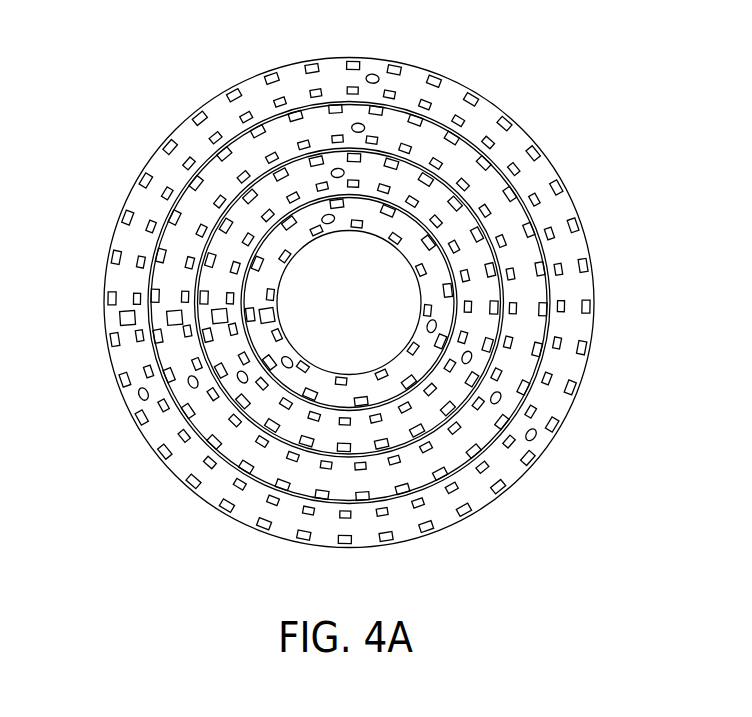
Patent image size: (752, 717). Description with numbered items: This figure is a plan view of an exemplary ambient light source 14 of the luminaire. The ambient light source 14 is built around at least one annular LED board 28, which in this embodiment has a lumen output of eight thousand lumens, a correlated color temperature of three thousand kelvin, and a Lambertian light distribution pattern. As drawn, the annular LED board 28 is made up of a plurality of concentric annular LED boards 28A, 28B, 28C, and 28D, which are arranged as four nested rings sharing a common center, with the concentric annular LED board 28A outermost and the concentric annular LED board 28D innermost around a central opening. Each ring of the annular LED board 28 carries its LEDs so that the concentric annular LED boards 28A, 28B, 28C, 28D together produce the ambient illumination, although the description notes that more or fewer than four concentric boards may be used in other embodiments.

The ambient light source 14 is at (97, 89).
The annular LED board 28 is at (528, 136).
The concentric annular LED board 28A is at (127, 355).
The concentric annular LED board 28B is at (203, 418).
The concentric annular LED board 28C is at (425, 410).
The concentric annular LED board 28D is at (425, 327).